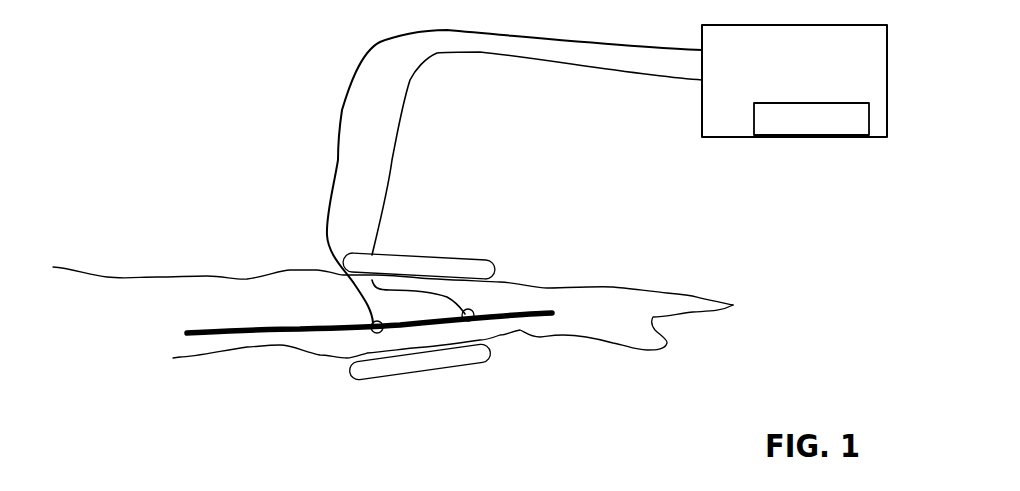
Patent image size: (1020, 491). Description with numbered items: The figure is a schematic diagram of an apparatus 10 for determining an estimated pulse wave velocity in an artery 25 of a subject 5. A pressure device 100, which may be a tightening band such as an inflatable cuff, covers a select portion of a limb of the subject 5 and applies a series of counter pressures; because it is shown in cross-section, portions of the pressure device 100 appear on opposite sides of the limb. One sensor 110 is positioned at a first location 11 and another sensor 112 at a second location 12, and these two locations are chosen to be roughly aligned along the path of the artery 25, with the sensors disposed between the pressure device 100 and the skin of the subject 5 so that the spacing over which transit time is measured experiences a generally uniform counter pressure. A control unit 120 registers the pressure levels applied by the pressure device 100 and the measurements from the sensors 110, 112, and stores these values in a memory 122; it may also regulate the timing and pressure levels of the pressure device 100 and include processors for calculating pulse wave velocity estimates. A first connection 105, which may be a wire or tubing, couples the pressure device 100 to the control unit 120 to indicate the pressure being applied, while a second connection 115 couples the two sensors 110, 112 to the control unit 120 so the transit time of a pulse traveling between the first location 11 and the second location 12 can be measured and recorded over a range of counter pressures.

The subject 5 is at (95, 290).
The apparatus 10 is at (582, 398).
The first location 11 is at (356, 300).
The second location 12 is at (494, 298).
The artery 25 is at (243, 330).
The pressure device 100 is at (457, 258).
The first connection 105 is at (437, 55).
The sensor 110 is at (375, 331).
The sensor 112 is at (472, 322).
The second connection 115 is at (408, 35).
The control unit 120 is at (815, 91).
The memory 122 is at (812, 136).